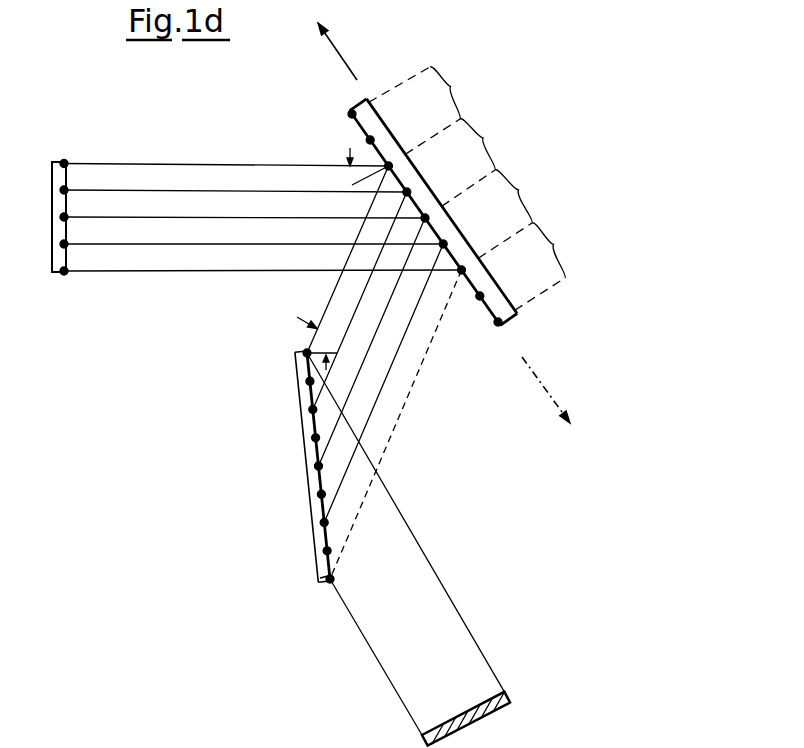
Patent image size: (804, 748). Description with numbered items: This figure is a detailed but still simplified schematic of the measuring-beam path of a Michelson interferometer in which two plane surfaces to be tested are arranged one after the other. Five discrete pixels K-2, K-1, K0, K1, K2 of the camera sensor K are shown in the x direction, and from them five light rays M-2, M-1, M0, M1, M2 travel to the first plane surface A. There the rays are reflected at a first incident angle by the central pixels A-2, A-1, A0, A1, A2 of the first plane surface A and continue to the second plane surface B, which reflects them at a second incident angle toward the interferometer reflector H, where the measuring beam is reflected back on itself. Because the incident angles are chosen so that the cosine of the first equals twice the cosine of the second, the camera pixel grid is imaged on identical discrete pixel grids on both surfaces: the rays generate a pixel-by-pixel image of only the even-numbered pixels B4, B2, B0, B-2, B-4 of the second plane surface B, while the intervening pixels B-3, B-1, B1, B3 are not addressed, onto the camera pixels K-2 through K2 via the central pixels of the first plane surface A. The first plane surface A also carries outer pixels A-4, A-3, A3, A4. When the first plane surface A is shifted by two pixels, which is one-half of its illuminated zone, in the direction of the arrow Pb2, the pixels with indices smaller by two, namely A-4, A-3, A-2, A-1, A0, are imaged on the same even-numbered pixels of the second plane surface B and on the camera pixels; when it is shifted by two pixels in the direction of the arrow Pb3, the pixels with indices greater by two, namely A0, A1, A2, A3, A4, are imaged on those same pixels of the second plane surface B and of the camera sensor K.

The camera sensor K is at (68, 178).
The pixel of camera sensor K2 is at (64, 164).
The pixel of camera sensor K1 is at (64, 190).
The pixel of camera sensor K0 is at (64, 217).
The pixel of camera sensor K-1 is at (64, 244).
The pixel of camera sensor K-2 is at (64, 271).
The light ray M2 is at (190, 163).
The light ray M1 is at (240, 190).
The light ray M0 is at (282, 216).
The light ray M-1 is at (172, 244).
The light ray M-2 is at (245, 271).
The first plane surface A is at (487, 311).
The pixel of first plane surface A4 is at (352, 113).
The pixel of first plane surface A3 is at (370, 139).
The pixel of first plane surface A2 is at (388, 166).
The pixel of first plane surface A1 is at (407, 192).
The pixel of first plane surface A0 is at (425, 218).
The pixel of first plane surface A-1 is at (443, 244).
The pixel of first plane surface A-2 is at (462, 270).
The pixel of first plane surface A-3 is at (480, 296).
The pixel of first plane surface A-4 is at (498, 322).
The second plane surface B is at (342, 590).
The pixel of second plane surface B-4 is at (306, 353).
The pixel of second plane surface B-3 is at (310, 381).
The pixel of second plane surface B-2 is at (313, 410).
The pixel of second plane surface B-1 is at (316, 438).
The pixel of second plane surface B0 is at (318, 466).
The pixel of second plane surface B1 is at (321, 494).
The pixel of second plane surface B2 is at (324, 522).
The pixel of second plane surface B3 is at (327, 551).
The pixel of second plane surface B4 is at (330, 580).
The interferometer reflector H is at (489, 699).
The shift direction arrow Pb2 is at (343, 57).
The shift direction arrow Pb3 is at (543, 384).